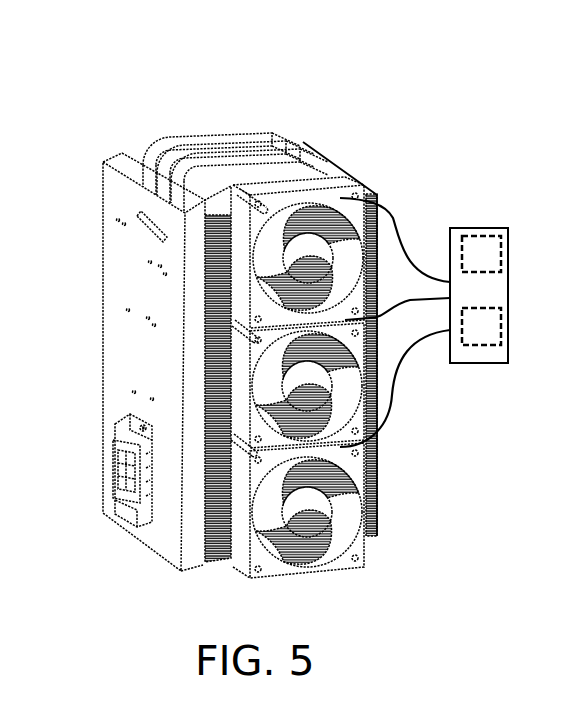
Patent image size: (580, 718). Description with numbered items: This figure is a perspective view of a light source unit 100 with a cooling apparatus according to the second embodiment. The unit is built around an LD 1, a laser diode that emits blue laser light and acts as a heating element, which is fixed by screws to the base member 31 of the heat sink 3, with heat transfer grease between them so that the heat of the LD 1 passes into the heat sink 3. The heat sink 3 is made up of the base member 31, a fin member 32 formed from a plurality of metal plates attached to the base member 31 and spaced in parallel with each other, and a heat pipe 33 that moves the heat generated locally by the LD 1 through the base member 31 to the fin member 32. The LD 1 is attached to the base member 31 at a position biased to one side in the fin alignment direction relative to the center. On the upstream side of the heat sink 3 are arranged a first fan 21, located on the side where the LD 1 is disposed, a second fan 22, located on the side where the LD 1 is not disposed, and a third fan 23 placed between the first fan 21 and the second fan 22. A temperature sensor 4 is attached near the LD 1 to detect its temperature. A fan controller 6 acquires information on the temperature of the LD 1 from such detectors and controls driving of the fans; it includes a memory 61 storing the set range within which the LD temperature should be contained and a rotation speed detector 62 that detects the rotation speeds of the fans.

The light source unit 100 is at (66, 102).
The heat sink 3 is at (342, 84).
The base member 31 is at (123, 158).
The heat pipe 33 is at (220, 150).
The fin member 32 is at (305, 143).
The second fan 22 is at (345, 190).
The third fan 23 is at (352, 417).
The first fan 21 is at (357, 535).
The temperature sensor 4 is at (143, 428).
The LD 1 is at (118, 477).
The fan controller 6 is at (508, 292).
The memory 61 is at (483, 333).
The rotation speed detector 62 is at (483, 250).